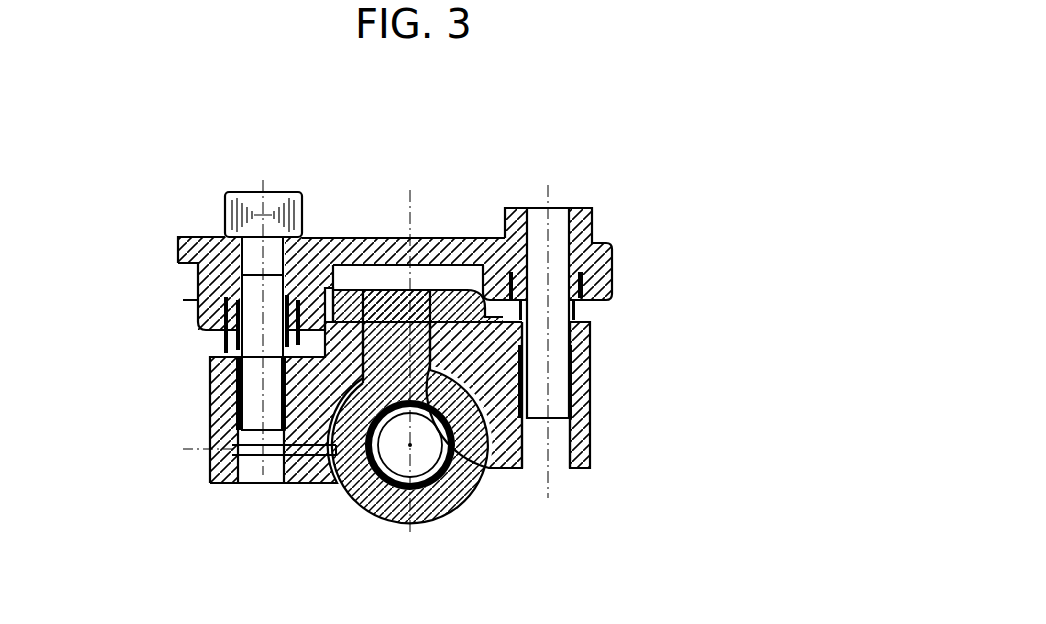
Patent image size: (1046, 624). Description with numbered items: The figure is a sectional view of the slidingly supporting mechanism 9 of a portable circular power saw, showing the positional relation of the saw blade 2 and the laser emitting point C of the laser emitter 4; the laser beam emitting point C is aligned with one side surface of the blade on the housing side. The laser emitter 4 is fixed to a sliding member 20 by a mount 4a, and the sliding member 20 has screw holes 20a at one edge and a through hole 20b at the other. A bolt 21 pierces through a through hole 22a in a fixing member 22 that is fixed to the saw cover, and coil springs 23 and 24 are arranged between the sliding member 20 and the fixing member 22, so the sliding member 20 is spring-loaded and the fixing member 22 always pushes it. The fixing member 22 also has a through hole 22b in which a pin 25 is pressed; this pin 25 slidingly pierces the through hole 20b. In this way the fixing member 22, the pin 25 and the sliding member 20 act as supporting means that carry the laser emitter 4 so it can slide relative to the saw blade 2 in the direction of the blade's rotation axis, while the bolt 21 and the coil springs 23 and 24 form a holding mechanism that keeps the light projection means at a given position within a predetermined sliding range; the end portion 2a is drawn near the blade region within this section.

The saw blade 2 is at (197, 447).
The pin end 2a is at (336, 455).
The laser emitter 4 is at (462, 510).
The mount 4a is at (387, 290).
The slidingly supporting mechanism 9 is at (598, 124).
The sliding member 20 is at (593, 340).
The screw holes 20a is at (248, 483).
The through hole 20b is at (557, 473).
The bolt 21 is at (273, 203).
The fixing member 22 is at (610, 252).
The through hole 22a is at (224, 236).
The through hole 22b is at (566, 220).
The coil spring 23 is at (222, 333).
The coil spring 24 is at (603, 282).
The pin 25 is at (541, 222).
The laser emitting point C is at (410, 445).